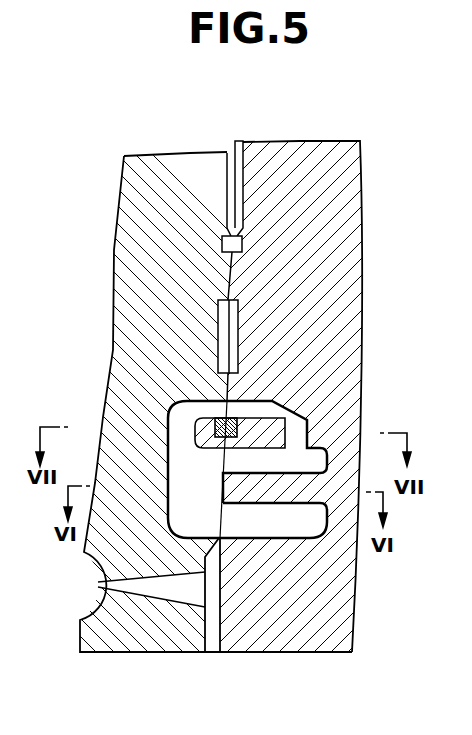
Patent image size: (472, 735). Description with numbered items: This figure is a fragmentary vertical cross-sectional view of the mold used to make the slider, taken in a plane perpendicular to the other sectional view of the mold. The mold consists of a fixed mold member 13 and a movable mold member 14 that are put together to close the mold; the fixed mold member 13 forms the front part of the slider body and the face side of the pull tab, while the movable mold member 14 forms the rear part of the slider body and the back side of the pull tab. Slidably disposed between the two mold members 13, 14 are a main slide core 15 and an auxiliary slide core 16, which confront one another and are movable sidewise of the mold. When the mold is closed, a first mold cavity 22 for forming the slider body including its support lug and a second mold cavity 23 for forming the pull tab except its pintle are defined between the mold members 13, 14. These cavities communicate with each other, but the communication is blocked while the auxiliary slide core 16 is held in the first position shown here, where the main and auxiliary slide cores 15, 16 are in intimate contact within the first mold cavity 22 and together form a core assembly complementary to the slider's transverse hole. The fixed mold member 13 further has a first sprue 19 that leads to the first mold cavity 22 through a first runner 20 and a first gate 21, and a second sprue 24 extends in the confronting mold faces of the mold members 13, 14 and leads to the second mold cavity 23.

The fixed mold member 13 is at (115, 212).
The movable mold member 14 is at (352, 230).
The main slide core 15 is at (285, 429).
The auxiliary slide core 16 is at (215, 426).
The first sprue 19 is at (146, 588).
The first runner 20 is at (210, 643).
The first gate 21 is at (225, 548).
The first mold cavity 22 is at (246, 532).
The second mold cavity 23 is at (235, 340).
The second sprue 24 is at (248, 158).